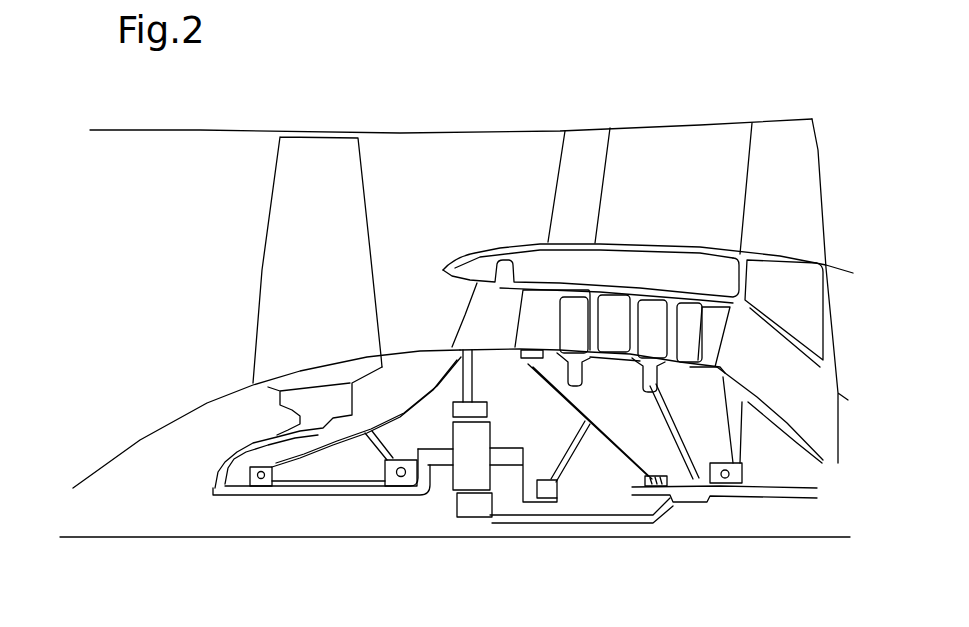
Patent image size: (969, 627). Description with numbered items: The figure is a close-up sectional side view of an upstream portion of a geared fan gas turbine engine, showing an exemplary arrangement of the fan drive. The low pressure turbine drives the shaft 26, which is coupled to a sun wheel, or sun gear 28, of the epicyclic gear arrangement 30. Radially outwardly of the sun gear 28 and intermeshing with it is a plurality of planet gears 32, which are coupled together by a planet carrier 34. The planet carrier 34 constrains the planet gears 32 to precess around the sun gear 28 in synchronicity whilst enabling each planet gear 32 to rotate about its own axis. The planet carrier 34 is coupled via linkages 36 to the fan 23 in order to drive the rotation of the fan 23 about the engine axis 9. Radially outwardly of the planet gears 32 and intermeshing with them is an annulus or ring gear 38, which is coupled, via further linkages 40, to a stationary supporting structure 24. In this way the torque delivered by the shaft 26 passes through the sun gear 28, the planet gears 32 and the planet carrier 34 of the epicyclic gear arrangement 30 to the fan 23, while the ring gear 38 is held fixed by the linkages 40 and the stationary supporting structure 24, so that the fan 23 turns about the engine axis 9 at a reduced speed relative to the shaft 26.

The engine axis 9 is at (455, 554).
The fan 23 is at (293, 260).
The stationary supporting structure 24 is at (627, 305).
The shaft 26 is at (653, 532).
The sun gear 28 is at (470, 540).
The epicyclic gear arrangement 30 is at (424, 498).
The planet gears 32 is at (427, 518).
The planet carrier 34 is at (523, 519).
The linkages 36 is at (337, 441).
The ring gear 38 is at (449, 422).
The linkages 40 is at (504, 392).